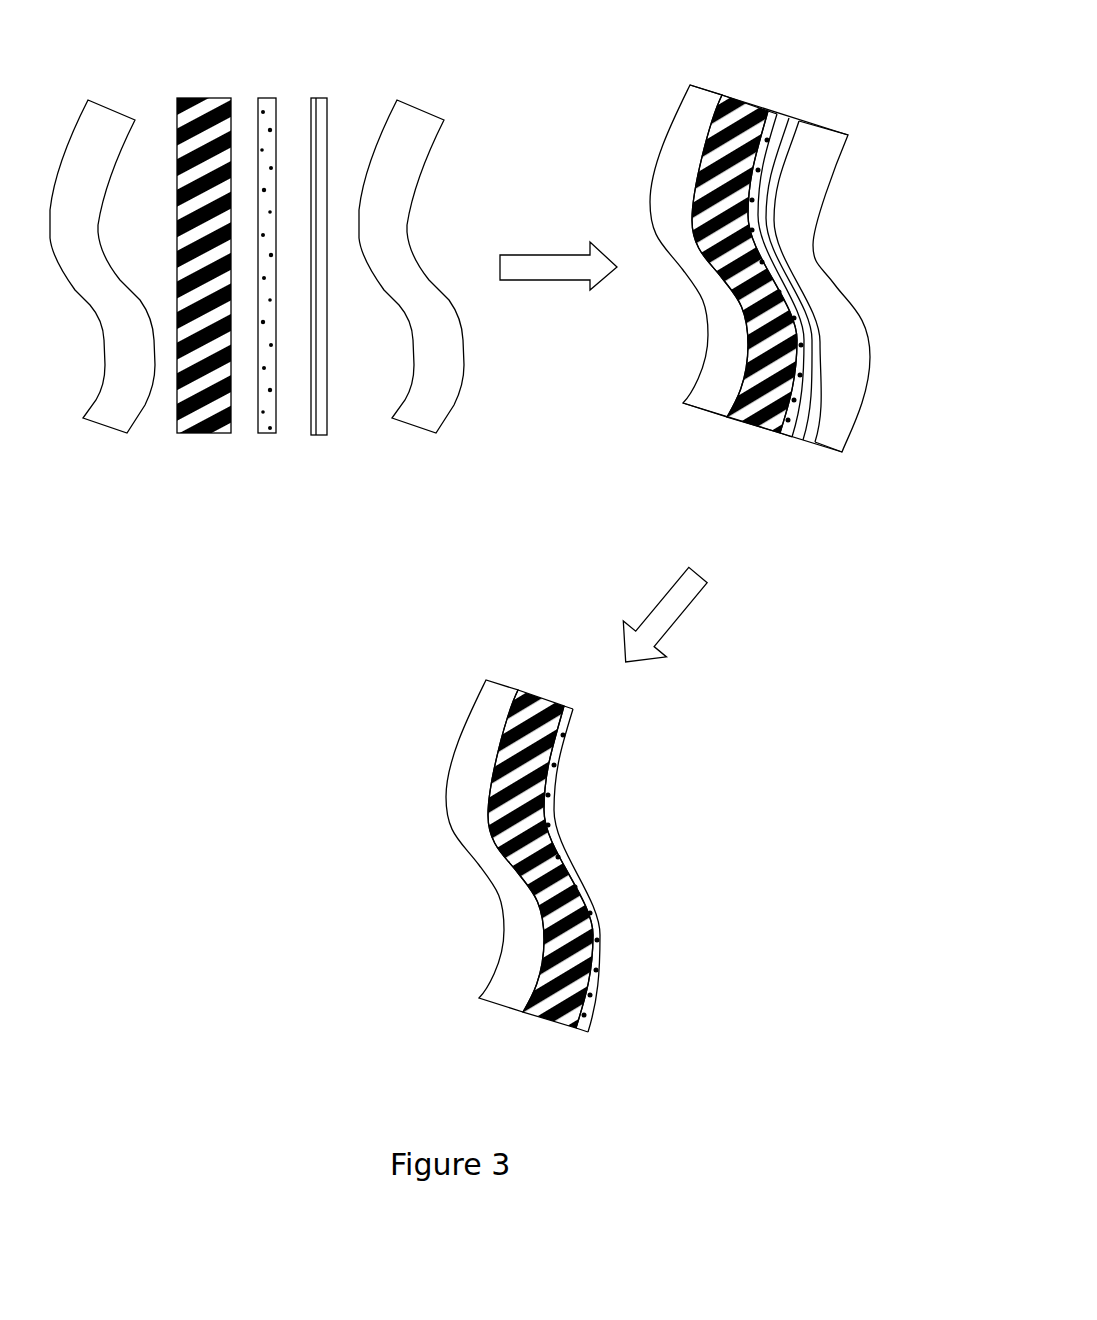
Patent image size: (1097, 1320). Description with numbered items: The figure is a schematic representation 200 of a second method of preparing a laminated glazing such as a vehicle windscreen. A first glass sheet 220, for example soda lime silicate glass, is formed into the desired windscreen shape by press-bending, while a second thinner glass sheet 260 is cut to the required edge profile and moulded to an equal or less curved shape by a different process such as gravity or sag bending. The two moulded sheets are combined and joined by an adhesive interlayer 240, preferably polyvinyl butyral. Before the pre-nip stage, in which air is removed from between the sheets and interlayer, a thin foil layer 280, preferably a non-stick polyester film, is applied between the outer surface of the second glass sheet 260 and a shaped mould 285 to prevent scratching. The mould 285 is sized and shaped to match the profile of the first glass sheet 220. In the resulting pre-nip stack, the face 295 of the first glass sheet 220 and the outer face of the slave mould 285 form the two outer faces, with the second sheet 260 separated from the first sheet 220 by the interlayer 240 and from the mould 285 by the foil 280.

The schematic representation 200 is at (187, 52).
The first glass sheet 220 is at (108, 413).
The adhesive interlayer 240 is at (202, 423).
The second glass sheet 260 is at (268, 433).
The thin foil layer 280 is at (327, 430).
The shaped mould 285 is at (432, 425).
The face of the first glass sheet 295 is at (695, 367).